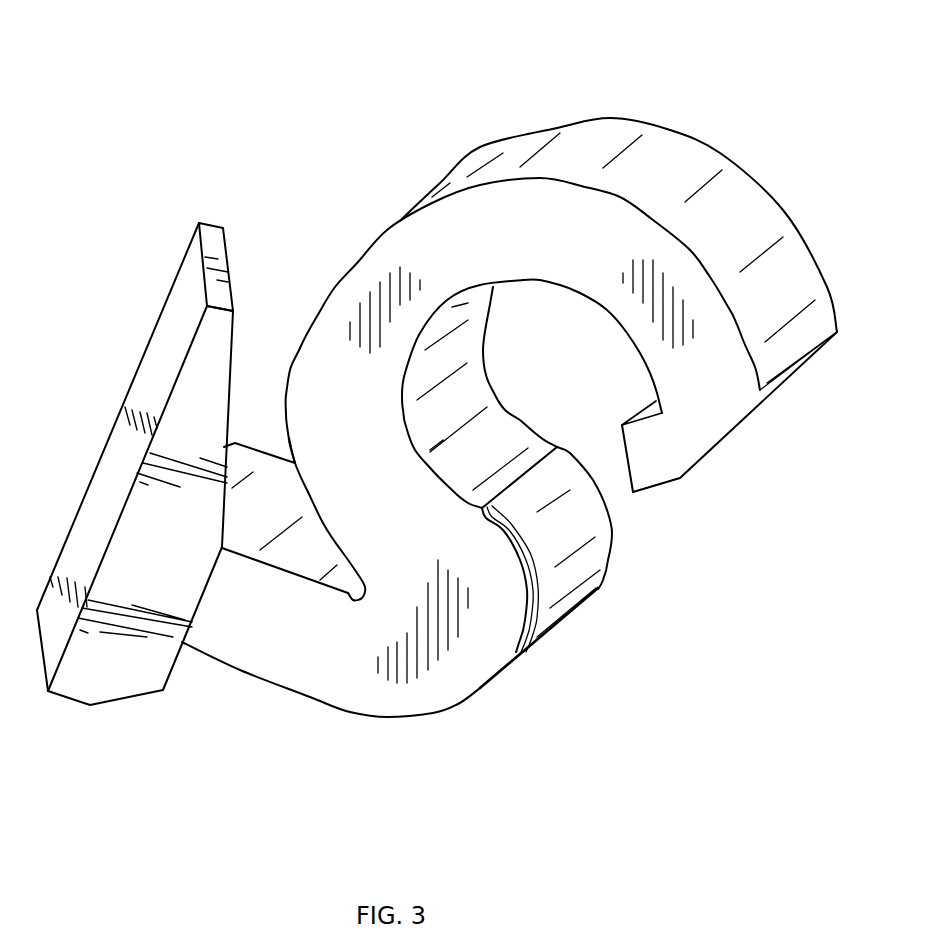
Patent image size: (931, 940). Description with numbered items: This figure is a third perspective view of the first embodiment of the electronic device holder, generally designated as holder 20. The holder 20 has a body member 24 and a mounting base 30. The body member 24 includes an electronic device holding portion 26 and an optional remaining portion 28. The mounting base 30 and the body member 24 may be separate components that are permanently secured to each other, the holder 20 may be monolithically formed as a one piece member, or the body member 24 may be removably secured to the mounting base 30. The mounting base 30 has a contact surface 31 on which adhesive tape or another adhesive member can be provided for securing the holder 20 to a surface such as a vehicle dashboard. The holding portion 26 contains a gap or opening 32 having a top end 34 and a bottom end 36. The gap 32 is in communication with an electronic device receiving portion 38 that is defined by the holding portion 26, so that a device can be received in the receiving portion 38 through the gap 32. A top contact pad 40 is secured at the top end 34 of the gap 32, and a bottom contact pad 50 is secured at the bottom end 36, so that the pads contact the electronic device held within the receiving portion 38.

The holder 20 is at (273, 152).
The body member 24 is at (364, 427).
The electronic device holding portion 26 is at (550, 214).
The remaining portion 28 is at (310, 697).
The mounting base 30 is at (175, 567).
The contact surface 31 is at (177, 313).
The gap or opening 32 is at (627, 513).
The top end 34 is at (642, 467).
The bottom end 36 is at (493, 617).
The electronic device receiving portion 38 is at (560, 340).
The top contact pad 40 is at (640, 411).
The bottom contact pad 50 is at (598, 589).